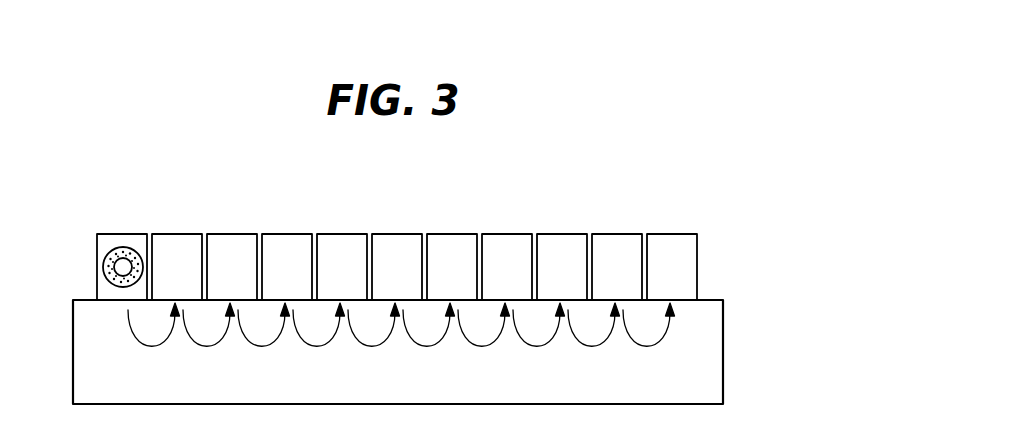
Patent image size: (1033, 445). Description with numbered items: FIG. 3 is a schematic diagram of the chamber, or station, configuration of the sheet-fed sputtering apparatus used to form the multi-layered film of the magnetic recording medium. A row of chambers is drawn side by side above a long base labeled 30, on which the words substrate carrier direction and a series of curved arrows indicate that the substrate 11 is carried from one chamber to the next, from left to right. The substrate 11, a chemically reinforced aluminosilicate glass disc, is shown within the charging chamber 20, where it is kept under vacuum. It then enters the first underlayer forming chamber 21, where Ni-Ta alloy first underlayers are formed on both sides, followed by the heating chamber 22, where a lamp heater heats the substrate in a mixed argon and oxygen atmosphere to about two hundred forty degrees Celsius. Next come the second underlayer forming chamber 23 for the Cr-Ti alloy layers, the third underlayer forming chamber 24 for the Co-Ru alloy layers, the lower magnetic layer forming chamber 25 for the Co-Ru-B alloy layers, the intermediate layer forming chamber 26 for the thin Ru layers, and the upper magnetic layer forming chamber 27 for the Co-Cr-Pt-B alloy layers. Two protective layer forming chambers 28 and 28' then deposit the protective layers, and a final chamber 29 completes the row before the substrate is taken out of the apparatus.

The substrate 11 is at (103, 267).
The charging chamber 20 is at (123, 242).
The first underlayer forming chamber 21 is at (178, 242).
The heating chamber 22 is at (233, 242).
The second underlayer forming chamber 23 is at (288, 242).
The third underlayer forming chamber 24 is at (343, 242).
The lower magnetic layer forming chamber 25 is at (398, 242).
The intermediate layer forming chamber 26 is at (453, 242).
The upper magnetic layer forming chamber 27 is at (508, 242).
The protective layer forming chamber 28 is at (562, 246).
The protective layer forming chamber 28' is at (617, 246).
The tenth processing chamber 29 is at (673, 242).
The substrate carrier 30 is at (716, 348).